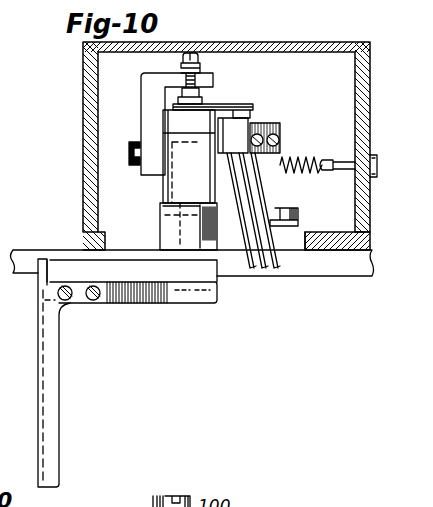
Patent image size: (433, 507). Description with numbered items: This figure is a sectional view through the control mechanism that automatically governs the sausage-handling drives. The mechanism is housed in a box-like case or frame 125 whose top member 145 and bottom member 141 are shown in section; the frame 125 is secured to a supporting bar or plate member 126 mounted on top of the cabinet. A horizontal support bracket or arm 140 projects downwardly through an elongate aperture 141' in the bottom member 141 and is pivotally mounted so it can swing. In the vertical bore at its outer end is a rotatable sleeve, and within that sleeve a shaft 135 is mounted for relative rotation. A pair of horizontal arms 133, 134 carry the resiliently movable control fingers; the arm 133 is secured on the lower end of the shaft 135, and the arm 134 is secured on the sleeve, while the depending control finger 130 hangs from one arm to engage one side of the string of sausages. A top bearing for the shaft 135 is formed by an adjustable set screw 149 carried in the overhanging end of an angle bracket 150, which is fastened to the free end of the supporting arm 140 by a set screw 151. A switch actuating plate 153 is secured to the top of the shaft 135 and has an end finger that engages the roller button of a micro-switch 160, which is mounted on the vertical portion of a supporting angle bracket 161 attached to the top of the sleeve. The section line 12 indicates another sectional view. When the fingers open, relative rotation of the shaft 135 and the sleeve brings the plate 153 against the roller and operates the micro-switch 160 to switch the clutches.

The section line 12- 12 is at (208, 32).
The box-like case or frame 125 is at (326, 42).
The supporting bar or plate member 126 is at (282, 252).
The actuating or control finger 130 is at (53, 412).
The horizontal arm 133 is at (120, 305).
The horizontal arm 134 is at (73, 258).
The shaft 135 is at (217, 297).
The horizontal support bracket or arm 140 is at (164, 191).
The bottom member 141 is at (324, 254).
The elongate aperture 141' is at (292, 267).
The top member 145 is at (233, 42).
The adjustable set screw 149 is at (181, 57).
The angle bracket 150 is at (143, 115).
The set screw 151 is at (133, 166).
The switch actuating plate 153 is at (216, 108).
The micro-switch 160 is at (277, 123).
The supporting angle bracket 161 is at (218, 180).